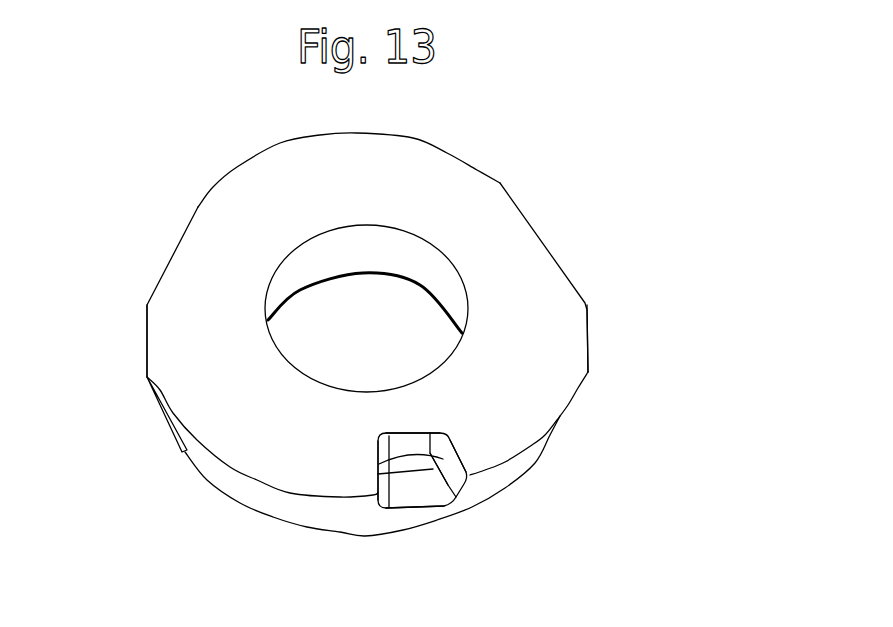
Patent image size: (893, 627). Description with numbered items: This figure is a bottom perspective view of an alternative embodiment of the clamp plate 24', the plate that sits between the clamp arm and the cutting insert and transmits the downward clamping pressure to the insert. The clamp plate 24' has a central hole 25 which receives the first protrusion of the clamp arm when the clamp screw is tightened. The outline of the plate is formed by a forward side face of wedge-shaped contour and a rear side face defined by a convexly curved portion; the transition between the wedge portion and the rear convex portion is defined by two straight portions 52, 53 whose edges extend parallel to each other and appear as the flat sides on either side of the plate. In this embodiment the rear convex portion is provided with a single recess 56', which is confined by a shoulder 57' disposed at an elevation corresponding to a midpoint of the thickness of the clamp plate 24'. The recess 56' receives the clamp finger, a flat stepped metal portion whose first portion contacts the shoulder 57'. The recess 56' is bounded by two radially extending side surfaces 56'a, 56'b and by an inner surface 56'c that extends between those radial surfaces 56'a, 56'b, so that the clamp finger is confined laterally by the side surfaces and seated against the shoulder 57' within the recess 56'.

The clamp plate 24' is at (371, 298).
The central hole 25 is at (393, 257).
The straight portion 52 is at (147, 343).
The straight portion 53 is at (588, 332).
The recess 56' is at (460, 505).
The radially extending side surface 56'a is at (285, 500).
The radially extending side surface 56'b is at (534, 477).
The inner surface 56'c is at (391, 382).
The shoulder 57' is at (369, 537).